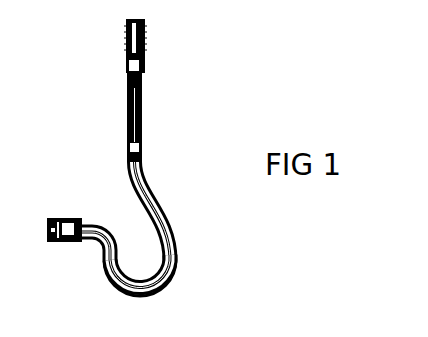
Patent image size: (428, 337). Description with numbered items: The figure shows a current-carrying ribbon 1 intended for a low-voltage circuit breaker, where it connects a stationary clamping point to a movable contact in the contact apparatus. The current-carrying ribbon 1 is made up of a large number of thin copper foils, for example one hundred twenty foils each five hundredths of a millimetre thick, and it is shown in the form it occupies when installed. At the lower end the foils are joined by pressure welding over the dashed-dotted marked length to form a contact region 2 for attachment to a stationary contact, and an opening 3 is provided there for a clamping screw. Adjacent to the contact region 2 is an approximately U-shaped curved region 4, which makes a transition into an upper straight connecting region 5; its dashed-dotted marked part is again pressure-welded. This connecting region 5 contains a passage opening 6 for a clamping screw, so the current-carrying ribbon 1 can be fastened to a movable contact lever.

The current-carrying ribbon 1 is at (156, 195).
The contact region 2 is at (58, 240).
The opening 3 is at (67, 218).
The curved region 4 is at (175, 279).
The connecting region 5 is at (143, 112).
The passage opening 6 is at (127, 67).